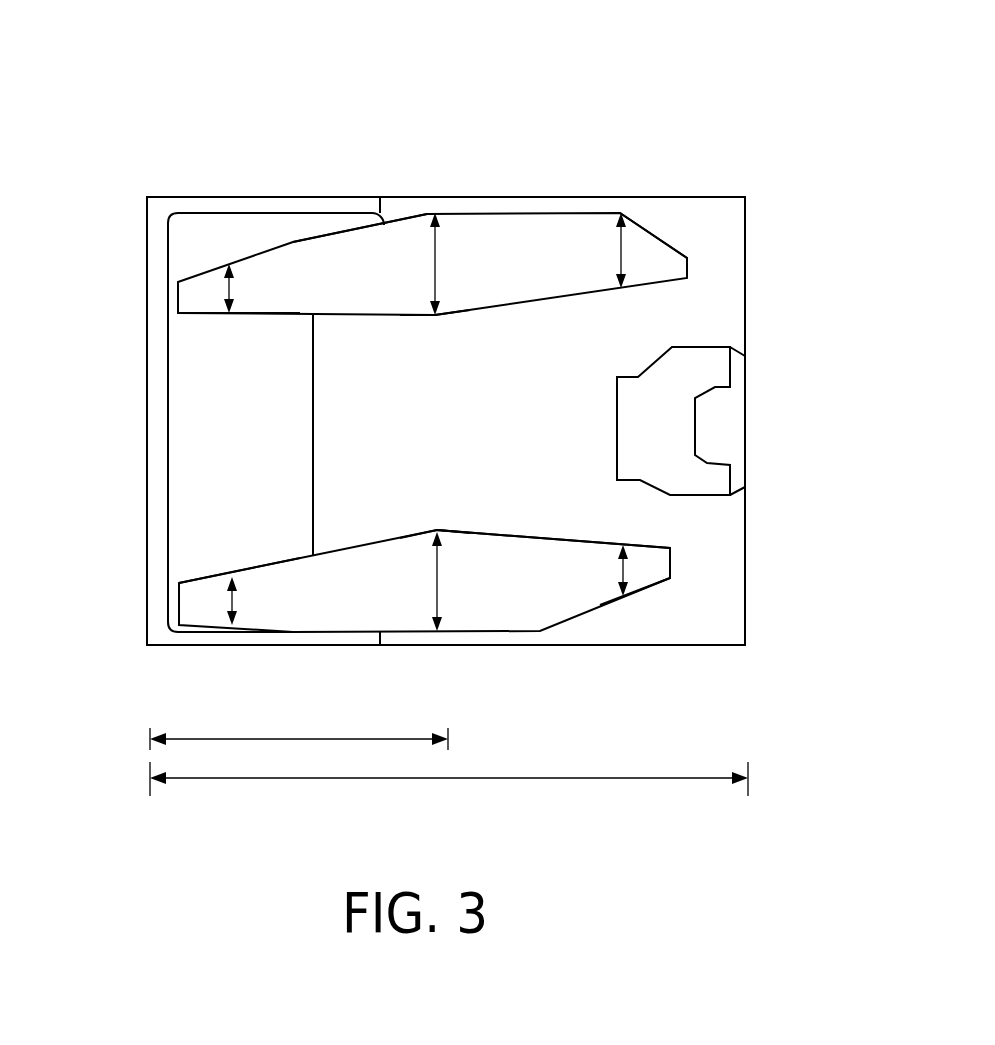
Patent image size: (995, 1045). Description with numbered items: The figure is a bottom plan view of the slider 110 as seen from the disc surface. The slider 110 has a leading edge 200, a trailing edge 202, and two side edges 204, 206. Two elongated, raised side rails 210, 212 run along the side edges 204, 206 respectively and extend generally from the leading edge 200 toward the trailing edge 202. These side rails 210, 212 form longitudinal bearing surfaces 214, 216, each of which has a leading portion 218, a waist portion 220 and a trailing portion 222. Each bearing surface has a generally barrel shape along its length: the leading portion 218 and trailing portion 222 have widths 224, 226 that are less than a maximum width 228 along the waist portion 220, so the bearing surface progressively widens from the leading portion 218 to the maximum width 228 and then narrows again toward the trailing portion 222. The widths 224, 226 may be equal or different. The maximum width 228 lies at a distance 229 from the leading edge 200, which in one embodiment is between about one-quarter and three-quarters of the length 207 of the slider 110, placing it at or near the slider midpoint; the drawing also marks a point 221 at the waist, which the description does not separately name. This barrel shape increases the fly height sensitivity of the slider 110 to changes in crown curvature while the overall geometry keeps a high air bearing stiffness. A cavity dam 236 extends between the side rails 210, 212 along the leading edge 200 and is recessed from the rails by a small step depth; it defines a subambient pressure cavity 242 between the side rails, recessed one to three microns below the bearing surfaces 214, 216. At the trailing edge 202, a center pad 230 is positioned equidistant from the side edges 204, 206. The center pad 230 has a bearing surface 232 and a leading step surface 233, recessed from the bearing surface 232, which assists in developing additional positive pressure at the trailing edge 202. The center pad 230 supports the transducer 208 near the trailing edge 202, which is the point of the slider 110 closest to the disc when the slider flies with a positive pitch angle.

The slider 110 is at (198, 117).
The leading edge 200 is at (147, 487).
The trailing edge 202 is at (748, 592).
The side edge 204 is at (457, 647).
The side edge 206 is at (497, 197).
The length 207 is at (485, 778).
The transducer 208 is at (745, 418).
The side rail 210 is at (367, 606).
The side rail 212 is at (353, 267).
The bearing surface 214 is at (520, 593).
The bearing surface 216 is at (405, 222).
The leading portion 218 is at (229, 317).
The waist portion 220 is at (435, 316).
The apex edge 221 is at (437, 316).
The trailing portion 222 is at (662, 283).
The width 224 is at (234, 295).
The width 226 is at (621, 252).
The maximum width 228 is at (440, 243).
The distance 229 is at (290, 737).
The center pad 230 is at (702, 369).
The bearing surface 232 is at (733, 437).
The leading step surface 233 is at (642, 408).
The cavity dam 236 is at (200, 422).
The subambient pressure cavity 242 is at (417, 430).